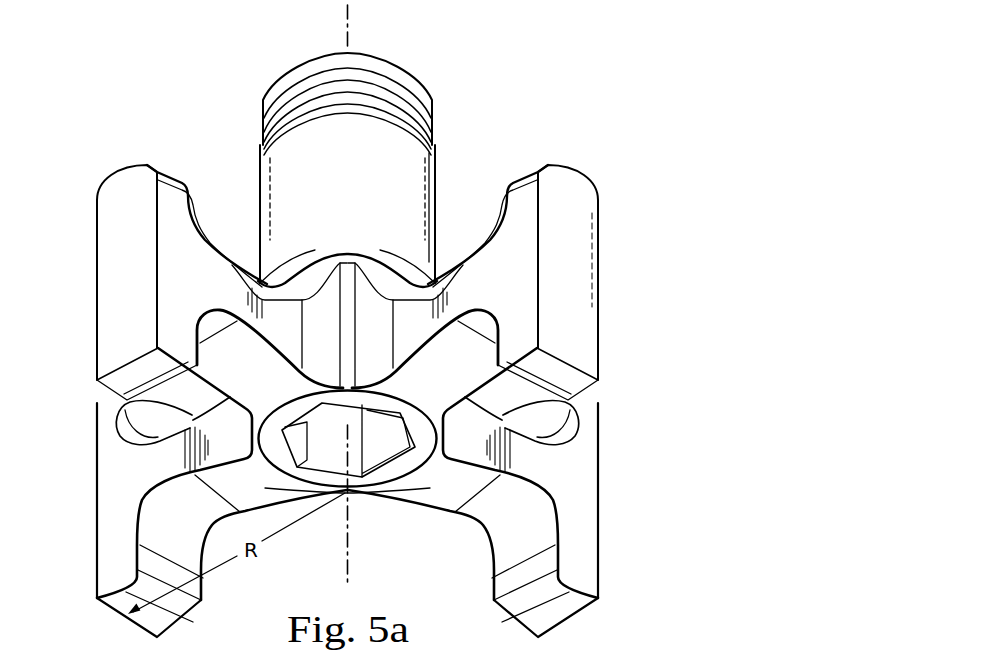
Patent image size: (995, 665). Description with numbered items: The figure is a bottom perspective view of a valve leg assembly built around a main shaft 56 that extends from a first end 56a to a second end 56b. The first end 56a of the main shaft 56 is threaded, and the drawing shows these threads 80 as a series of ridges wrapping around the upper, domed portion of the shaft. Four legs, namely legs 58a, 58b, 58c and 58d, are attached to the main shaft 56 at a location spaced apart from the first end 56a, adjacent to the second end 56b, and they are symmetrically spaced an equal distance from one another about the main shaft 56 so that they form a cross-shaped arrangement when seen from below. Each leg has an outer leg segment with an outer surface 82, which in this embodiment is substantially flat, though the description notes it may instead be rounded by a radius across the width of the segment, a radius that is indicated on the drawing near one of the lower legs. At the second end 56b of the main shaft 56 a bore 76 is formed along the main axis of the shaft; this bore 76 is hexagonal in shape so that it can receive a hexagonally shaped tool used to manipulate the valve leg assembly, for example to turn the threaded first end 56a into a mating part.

The main shaft 56 is at (353, 314).
The first end 56a is at (433, 128).
The second end 56b is at (354, 483).
The bore 76 is at (388, 445).
The threads 80 is at (262, 123).
The outer surface 82 is at (346, 282).
The leg 58a is at (606, 267).
The leg 58b is at (606, 522).
The leg 58c is at (90, 522).
The leg 58d is at (90, 267).